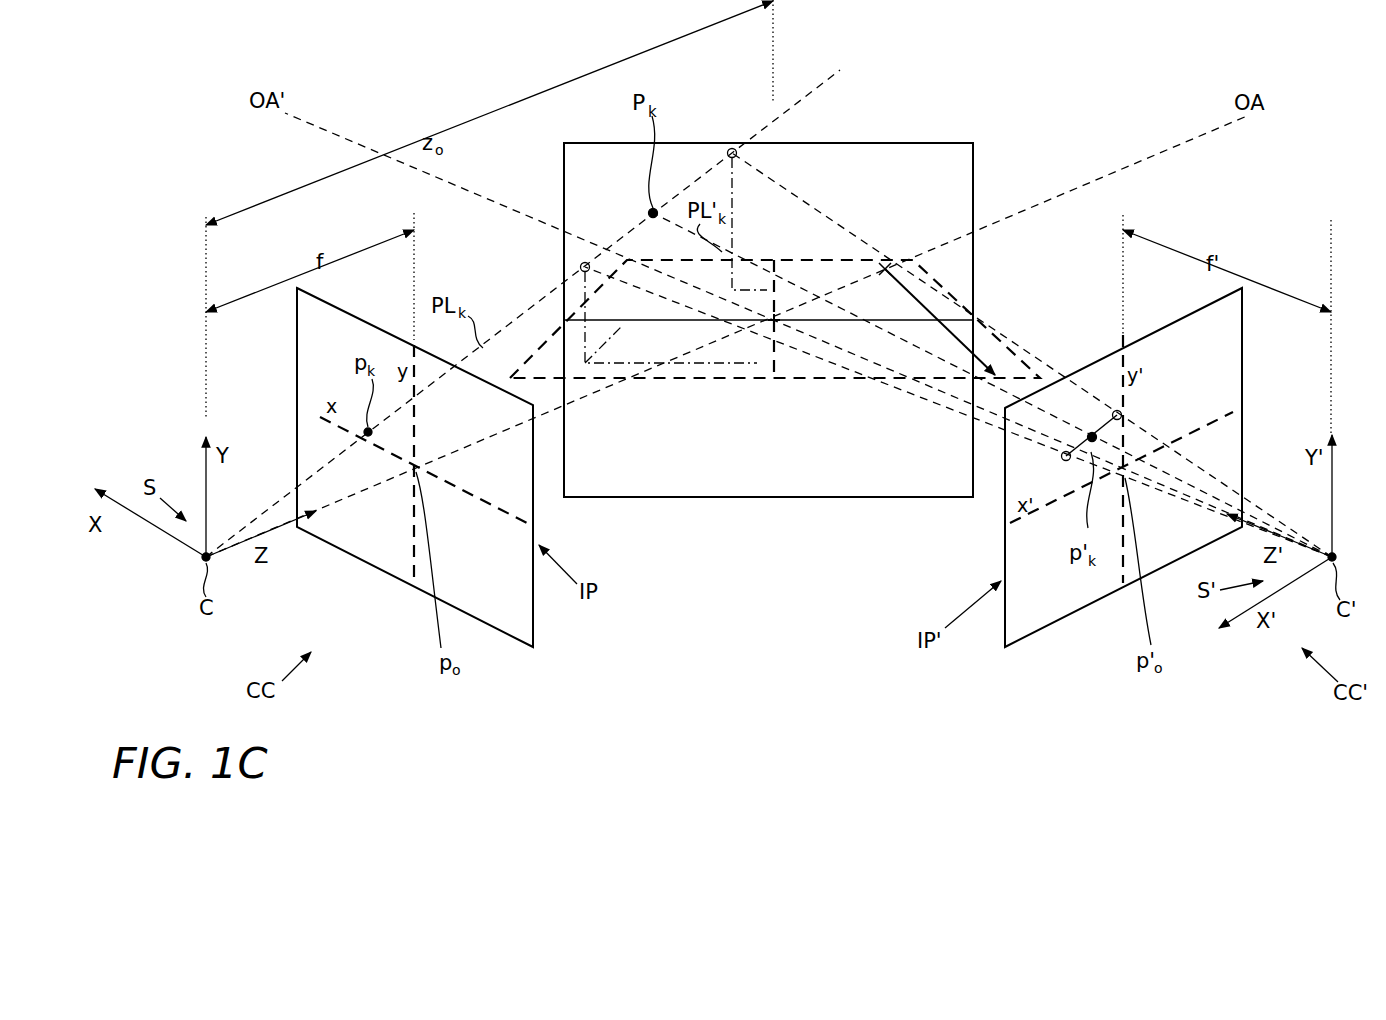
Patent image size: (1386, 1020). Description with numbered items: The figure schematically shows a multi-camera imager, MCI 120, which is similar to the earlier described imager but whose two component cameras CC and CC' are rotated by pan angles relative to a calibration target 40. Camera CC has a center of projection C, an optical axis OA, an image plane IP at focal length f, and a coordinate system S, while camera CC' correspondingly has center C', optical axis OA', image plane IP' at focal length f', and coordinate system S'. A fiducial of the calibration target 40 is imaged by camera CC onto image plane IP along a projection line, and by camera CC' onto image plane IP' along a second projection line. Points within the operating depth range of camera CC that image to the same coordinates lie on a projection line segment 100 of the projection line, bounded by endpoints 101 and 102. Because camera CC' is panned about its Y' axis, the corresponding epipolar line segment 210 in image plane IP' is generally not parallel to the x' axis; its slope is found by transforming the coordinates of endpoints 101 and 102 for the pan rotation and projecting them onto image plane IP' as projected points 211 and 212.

The MCI 120 is at (233, 161).
The projection line segment 100 is at (615, 225).
The calibration target 40 is at (892, 141).
The endpoint 101 is at (580, 267).
The endpoint 102 is at (732, 148).
The epipolar line segment 210 is at (1101, 417).
The projection of endpoint 101 211 is at (1066, 462).
The projection of endpoint 102 212 is at (1124, 414).